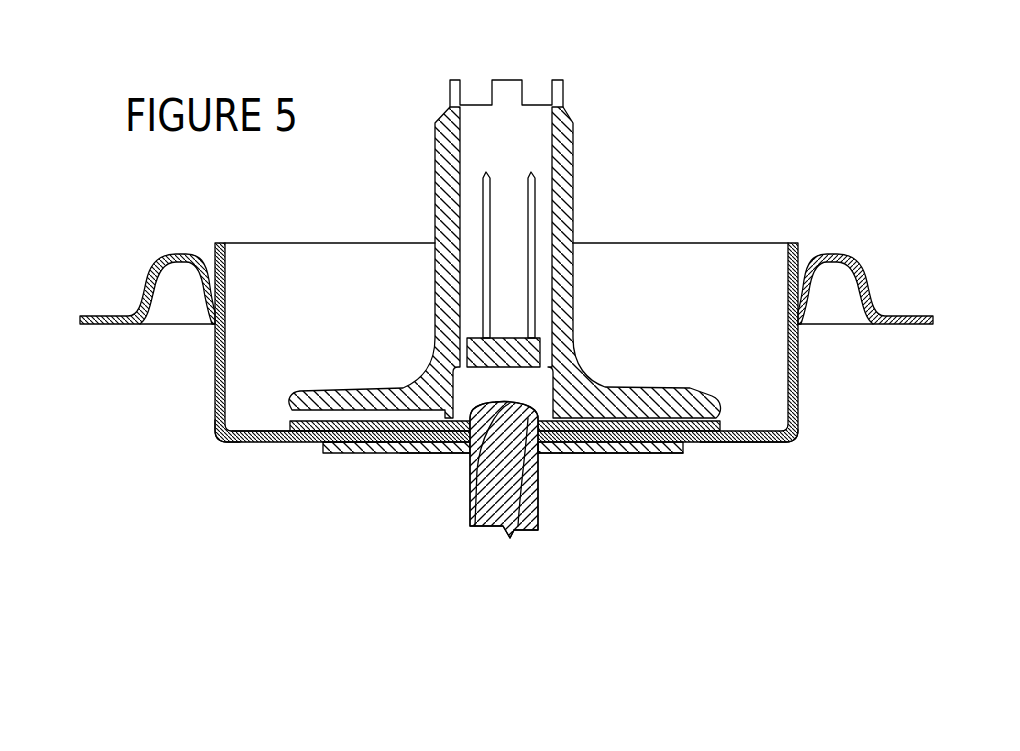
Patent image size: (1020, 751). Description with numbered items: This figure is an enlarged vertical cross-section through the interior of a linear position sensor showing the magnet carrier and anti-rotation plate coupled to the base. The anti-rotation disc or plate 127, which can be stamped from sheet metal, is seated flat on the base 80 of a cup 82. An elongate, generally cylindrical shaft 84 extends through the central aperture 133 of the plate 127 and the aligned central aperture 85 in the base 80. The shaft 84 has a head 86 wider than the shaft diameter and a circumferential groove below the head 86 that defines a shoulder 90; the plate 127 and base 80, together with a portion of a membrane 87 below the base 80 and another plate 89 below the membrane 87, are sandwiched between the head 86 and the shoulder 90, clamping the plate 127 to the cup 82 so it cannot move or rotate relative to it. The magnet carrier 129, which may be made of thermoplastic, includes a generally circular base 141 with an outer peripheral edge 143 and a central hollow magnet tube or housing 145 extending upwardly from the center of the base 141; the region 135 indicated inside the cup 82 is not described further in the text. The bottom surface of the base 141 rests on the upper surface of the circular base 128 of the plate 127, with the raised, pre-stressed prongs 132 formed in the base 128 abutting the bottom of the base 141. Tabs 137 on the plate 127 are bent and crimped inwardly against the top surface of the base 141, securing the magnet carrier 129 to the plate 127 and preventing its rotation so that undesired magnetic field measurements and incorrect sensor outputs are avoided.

The base plate 80 is at (752, 440).
The cup 82 is at (745, 240).
The shaft 84 is at (465, 500).
The central aperture 85 is at (520, 530).
The head 86 is at (578, 453).
The membrane 87 is at (218, 431).
The plate 89 is at (433, 450).
The shoulder 90 is at (548, 453).
The anti-rotation disc or plate 127 is at (282, 412).
The base 128 is at (367, 447).
The magnet carrier 129 is at (573, 150).
The prongs 132 is at (340, 437).
The central aperture 133 is at (475, 526).
The tube assembly 135 is at (623, 213).
The tabs 137 is at (318, 386).
The base 141 is at (623, 388).
The peripheral edge 143 is at (283, 433).
The magnet tube or housing 145 is at (435, 185).